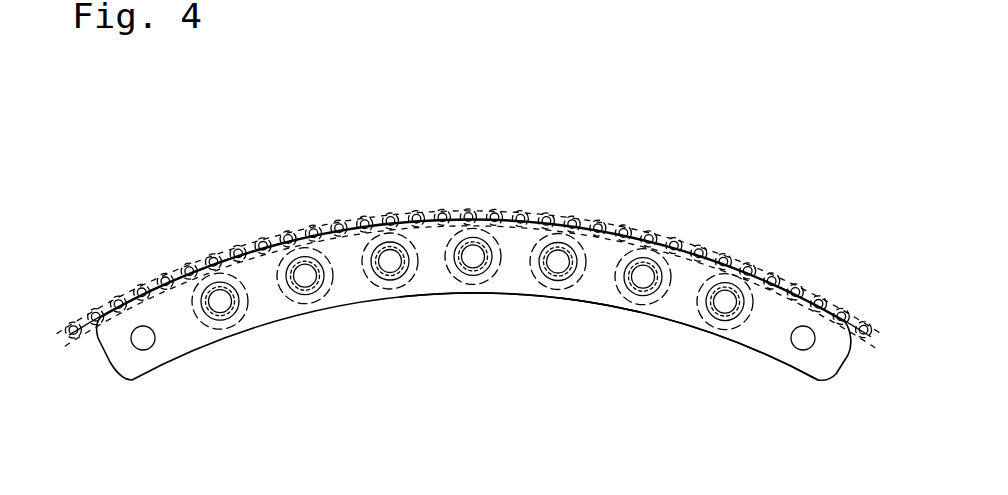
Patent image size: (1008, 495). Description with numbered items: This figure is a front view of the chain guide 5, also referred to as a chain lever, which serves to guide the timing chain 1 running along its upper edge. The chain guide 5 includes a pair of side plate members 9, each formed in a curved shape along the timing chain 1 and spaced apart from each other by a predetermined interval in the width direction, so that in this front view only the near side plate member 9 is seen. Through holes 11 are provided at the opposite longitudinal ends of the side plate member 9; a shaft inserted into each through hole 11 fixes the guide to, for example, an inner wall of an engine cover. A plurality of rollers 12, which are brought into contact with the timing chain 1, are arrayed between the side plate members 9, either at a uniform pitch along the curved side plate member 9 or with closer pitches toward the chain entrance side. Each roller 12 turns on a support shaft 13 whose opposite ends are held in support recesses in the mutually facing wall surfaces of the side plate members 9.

The timing chain 1 is at (651, 232).
The chain guide 5 is at (522, 320).
The side plate member 9 is at (440, 285).
The through hole 11 is at (143, 343).
The roller 12 is at (664, 325).
The support shaft 13 is at (648, 274).